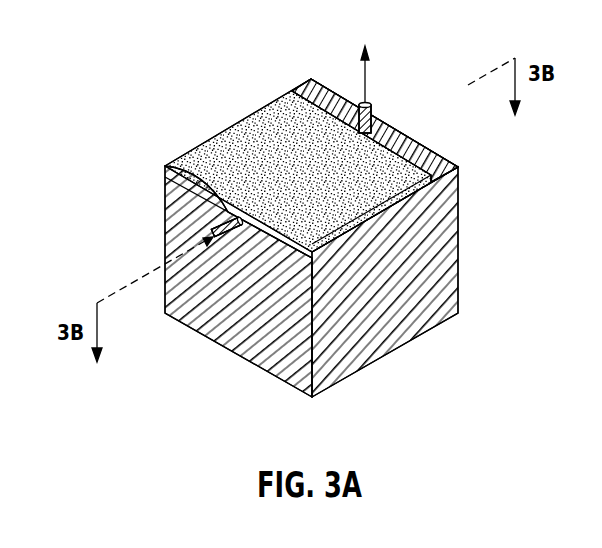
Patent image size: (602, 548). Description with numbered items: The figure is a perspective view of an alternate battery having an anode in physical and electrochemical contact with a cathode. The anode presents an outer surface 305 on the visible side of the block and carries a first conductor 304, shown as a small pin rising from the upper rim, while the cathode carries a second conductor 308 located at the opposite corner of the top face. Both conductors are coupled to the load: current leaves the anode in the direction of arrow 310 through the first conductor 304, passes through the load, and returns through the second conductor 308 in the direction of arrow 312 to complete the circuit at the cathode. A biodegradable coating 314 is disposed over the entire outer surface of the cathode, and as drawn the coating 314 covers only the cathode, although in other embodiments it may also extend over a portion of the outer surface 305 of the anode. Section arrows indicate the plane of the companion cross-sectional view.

The first conductor 304 is at (371, 108).
The outer surface of the anode 305 is at (433, 200).
The second conductor 308 is at (166, 166).
The direction arrow 310 is at (362, 66).
The arrow 312 is at (163, 267).
The biodegradable coating 314 is at (433, 278).